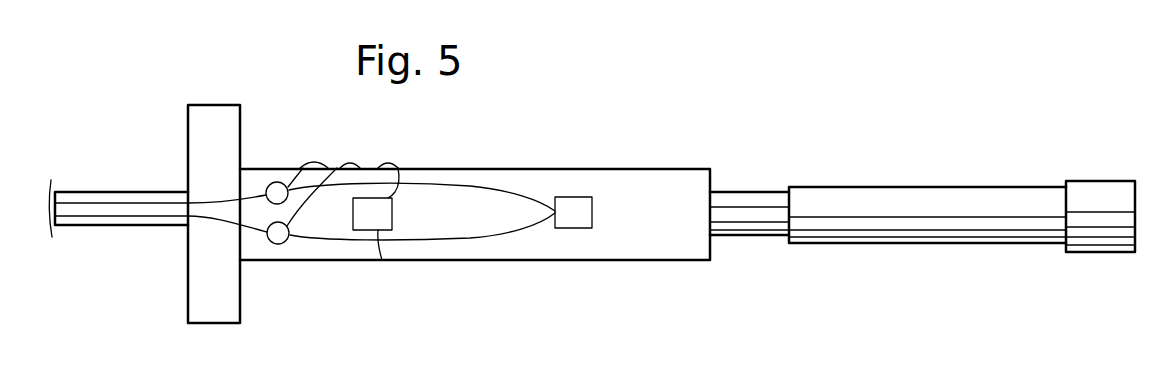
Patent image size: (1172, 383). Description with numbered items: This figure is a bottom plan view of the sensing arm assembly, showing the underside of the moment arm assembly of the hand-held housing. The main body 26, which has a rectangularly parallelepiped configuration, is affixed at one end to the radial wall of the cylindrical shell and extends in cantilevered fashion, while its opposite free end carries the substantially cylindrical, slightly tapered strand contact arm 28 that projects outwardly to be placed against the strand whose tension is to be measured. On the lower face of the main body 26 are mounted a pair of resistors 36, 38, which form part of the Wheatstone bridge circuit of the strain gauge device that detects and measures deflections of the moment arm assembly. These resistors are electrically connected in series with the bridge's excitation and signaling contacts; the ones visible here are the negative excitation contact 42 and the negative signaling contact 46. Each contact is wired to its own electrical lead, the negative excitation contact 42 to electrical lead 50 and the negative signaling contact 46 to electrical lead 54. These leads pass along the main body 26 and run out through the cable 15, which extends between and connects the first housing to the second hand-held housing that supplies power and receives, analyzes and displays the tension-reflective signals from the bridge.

The cable 15 is at (72, 228).
The main body 26 is at (650, 260).
The strand contact arm 28 is at (1025, 227).
The resistor 36 is at (568, 228).
The resistor 38 is at (392, 220).
The negative excitation contact 42 is at (266, 190).
The negative signaling contact 46 is at (280, 244).
The electrical lead 50 is at (115, 202).
The electrical lead 54 is at (133, 217).